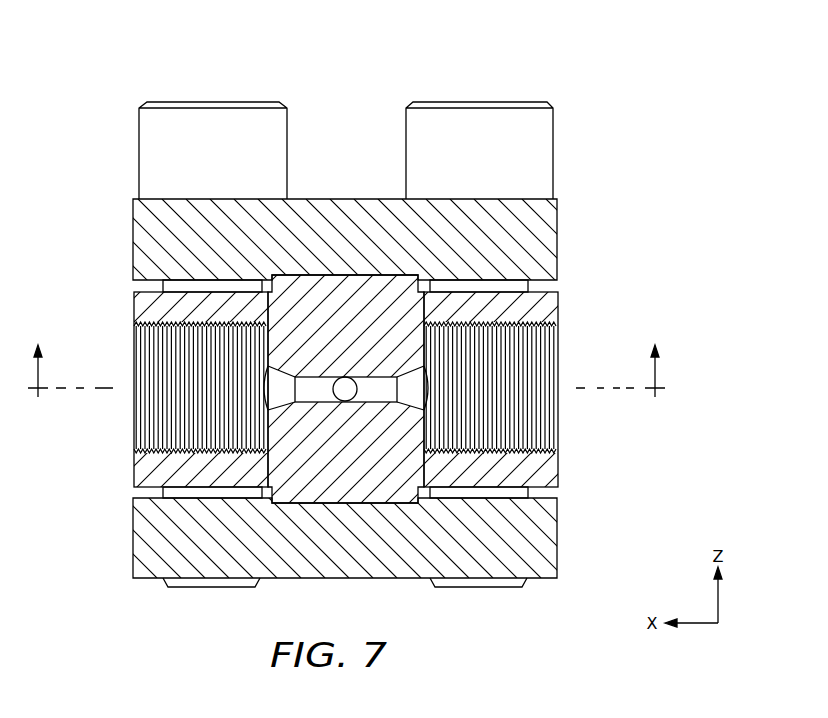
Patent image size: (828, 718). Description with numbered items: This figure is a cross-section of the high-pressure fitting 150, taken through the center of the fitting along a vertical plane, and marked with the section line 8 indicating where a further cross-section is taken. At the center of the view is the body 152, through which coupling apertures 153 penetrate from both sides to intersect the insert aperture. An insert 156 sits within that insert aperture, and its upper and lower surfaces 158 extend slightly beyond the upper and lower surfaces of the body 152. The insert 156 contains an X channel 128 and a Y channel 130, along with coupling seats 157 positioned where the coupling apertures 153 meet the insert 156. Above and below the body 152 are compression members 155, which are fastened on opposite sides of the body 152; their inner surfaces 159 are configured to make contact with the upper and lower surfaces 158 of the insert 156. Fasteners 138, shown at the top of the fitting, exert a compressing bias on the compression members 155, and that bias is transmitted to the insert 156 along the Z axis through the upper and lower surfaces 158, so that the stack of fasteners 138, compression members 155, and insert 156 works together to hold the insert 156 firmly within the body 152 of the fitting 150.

The high-pressure fitting 150 is at (117, 52).
The fasteners 138 is at (214, 125).
The compression members 155 is at (150, 238).
The body 152 is at (545, 312).
The coupling apertures 153 is at (178, 326).
The upper and lower surfaces 158 is at (396, 271).
The X channel 128 is at (310, 385).
The Y channel 130 is at (344, 377).
The insert 156 is at (395, 372).
The coupling seats 157 is at (270, 405).
The inner surfaces 159 is at (363, 279).
The section line 8- 8 is at (346, 354).